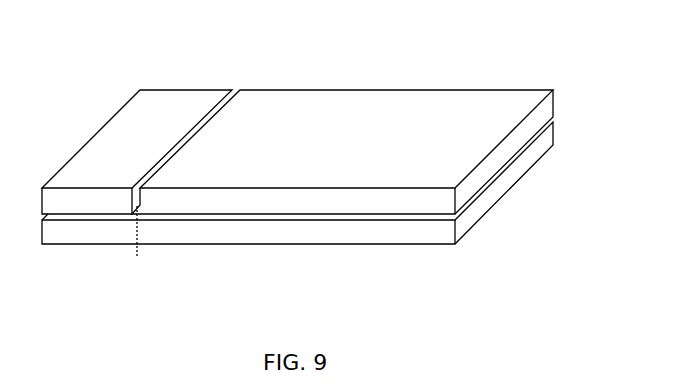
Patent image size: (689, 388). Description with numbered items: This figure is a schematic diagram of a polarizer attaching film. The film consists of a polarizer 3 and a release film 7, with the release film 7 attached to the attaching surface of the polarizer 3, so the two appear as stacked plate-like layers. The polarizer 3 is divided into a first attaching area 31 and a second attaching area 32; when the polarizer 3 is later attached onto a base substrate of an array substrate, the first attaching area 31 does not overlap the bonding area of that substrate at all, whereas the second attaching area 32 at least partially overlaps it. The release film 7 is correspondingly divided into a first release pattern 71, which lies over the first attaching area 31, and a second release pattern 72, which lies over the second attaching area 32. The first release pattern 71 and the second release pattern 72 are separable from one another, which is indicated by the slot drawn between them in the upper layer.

The release film 7 is at (297, 113).
The first release pattern 71 is at (215, 45).
The second release pattern 72 is at (186, 104).
The polarizer 3 is at (297, 225).
The first attaching area 31 is at (345, 209).
The second attaching area 32 is at (93, 238).